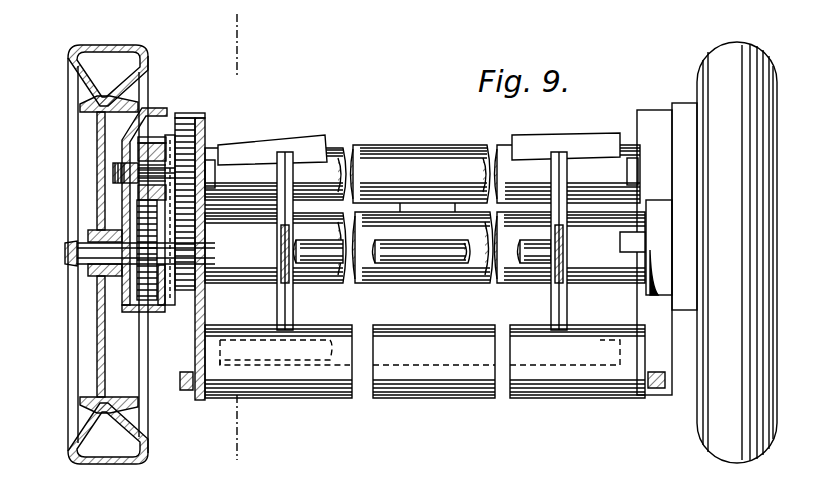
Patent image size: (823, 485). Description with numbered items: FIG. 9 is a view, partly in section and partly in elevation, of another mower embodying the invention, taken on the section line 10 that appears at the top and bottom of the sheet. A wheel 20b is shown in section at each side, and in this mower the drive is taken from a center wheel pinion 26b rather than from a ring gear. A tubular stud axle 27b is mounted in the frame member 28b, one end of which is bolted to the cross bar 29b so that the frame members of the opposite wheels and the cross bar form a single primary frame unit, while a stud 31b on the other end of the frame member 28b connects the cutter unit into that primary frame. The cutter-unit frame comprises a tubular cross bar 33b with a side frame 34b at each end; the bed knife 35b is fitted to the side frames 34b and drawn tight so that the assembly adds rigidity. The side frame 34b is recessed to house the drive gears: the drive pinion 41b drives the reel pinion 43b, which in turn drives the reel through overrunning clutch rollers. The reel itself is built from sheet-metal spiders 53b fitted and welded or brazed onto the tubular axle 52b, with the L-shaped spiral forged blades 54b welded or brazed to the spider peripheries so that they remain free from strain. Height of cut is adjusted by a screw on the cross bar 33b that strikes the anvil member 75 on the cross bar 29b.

The section line 10 is at (239, 28).
The wheel 20b is at (86, 458).
The center wheel pinion 26b is at (152, 302).
The tubular stud axle 27b is at (90, 253).
The frame member 28b is at (157, 104).
The cross bar 29b is at (455, 270).
The stud 31b is at (113, 175).
The tubular cross bar 33b is at (390, 145).
The side frame 34b is at (200, 116).
The bed knife 35b is at (352, 400).
The drive pinion 41b is at (152, 142).
The reel pinion 43b is at (205, 228).
The tubular axle 52b is at (258, 262).
The spider 53b is at (422, 241).
The blade 54b is at (322, 138).
The anvil member 75 is at (427, 207).